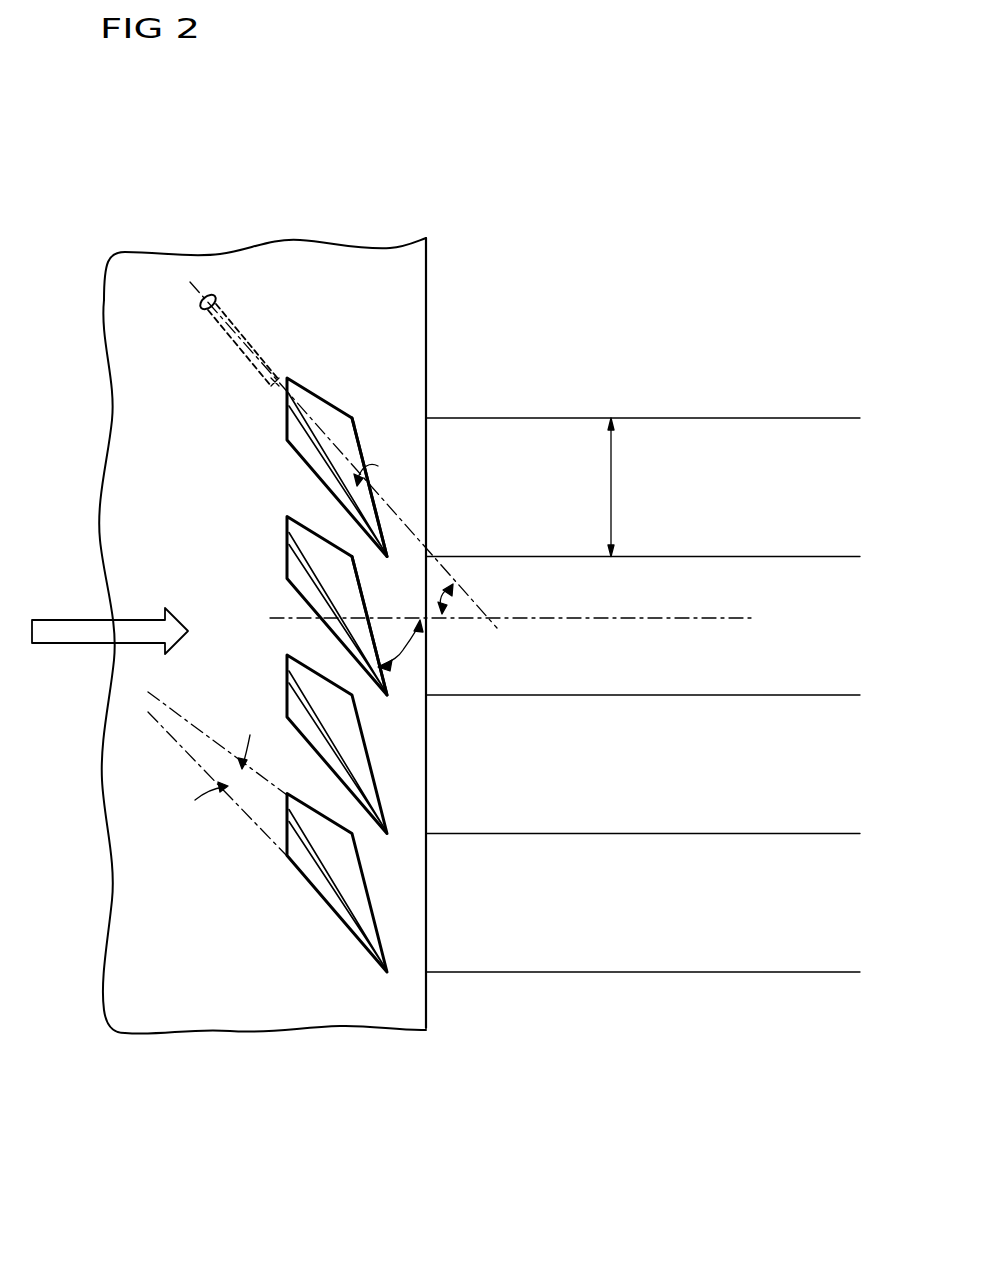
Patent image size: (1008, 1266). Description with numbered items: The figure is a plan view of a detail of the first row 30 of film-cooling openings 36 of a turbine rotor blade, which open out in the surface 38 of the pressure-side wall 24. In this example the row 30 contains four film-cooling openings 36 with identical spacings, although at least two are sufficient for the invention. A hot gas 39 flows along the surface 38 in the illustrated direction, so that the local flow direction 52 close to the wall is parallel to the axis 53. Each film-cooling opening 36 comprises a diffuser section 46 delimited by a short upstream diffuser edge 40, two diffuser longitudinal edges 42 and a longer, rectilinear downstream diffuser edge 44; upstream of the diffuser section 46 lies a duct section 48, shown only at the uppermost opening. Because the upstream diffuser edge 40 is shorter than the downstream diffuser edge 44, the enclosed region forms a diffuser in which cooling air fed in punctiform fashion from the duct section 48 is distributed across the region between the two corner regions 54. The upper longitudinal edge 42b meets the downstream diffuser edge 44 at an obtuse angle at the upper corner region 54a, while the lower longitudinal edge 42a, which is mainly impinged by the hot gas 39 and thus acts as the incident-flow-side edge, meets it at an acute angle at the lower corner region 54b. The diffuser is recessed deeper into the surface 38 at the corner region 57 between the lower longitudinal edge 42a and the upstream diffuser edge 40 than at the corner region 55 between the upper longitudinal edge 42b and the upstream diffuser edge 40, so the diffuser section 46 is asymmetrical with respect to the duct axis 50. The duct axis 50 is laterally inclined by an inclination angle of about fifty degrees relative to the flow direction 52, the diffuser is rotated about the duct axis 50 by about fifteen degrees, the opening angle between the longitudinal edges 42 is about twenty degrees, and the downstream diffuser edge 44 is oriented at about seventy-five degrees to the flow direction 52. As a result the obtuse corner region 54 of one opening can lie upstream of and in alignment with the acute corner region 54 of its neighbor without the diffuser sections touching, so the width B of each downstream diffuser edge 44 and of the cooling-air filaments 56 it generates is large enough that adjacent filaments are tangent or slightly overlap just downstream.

The pressure-side wall 24 is at (380, 633).
The surface 38 is at (403, 297).
The first row 30 is at (333, 988).
The film-cooling opening 36 is at (338, 637).
The hot gas 39 is at (110, 602).
The local flow direction 52 is at (62, 620).
The upstream diffuser edge 40 is at (296, 613).
The diffuser longitudinal edge 42 is at (296, 613).
The lower longitudinal edge 42a is at (296, 613).
The upper longitudinal edge 42b is at (296, 613).
The downstream diffuser edge 44 is at (366, 448).
The diffuser section 46 is at (334, 421).
The duct section 48 is at (244, 338).
The duct axis 50 is at (476, 599).
The axis 53 is at (673, 618).
The corner region 54 is at (365, 699).
The upper corner region 54a is at (365, 699).
The lower corner region 54b is at (357, 424).
The corner region 55 is at (296, 613).
The cooling-air filament 56 is at (832, 505).
The corner region 57 is at (296, 613).
The width B is at (612, 490).